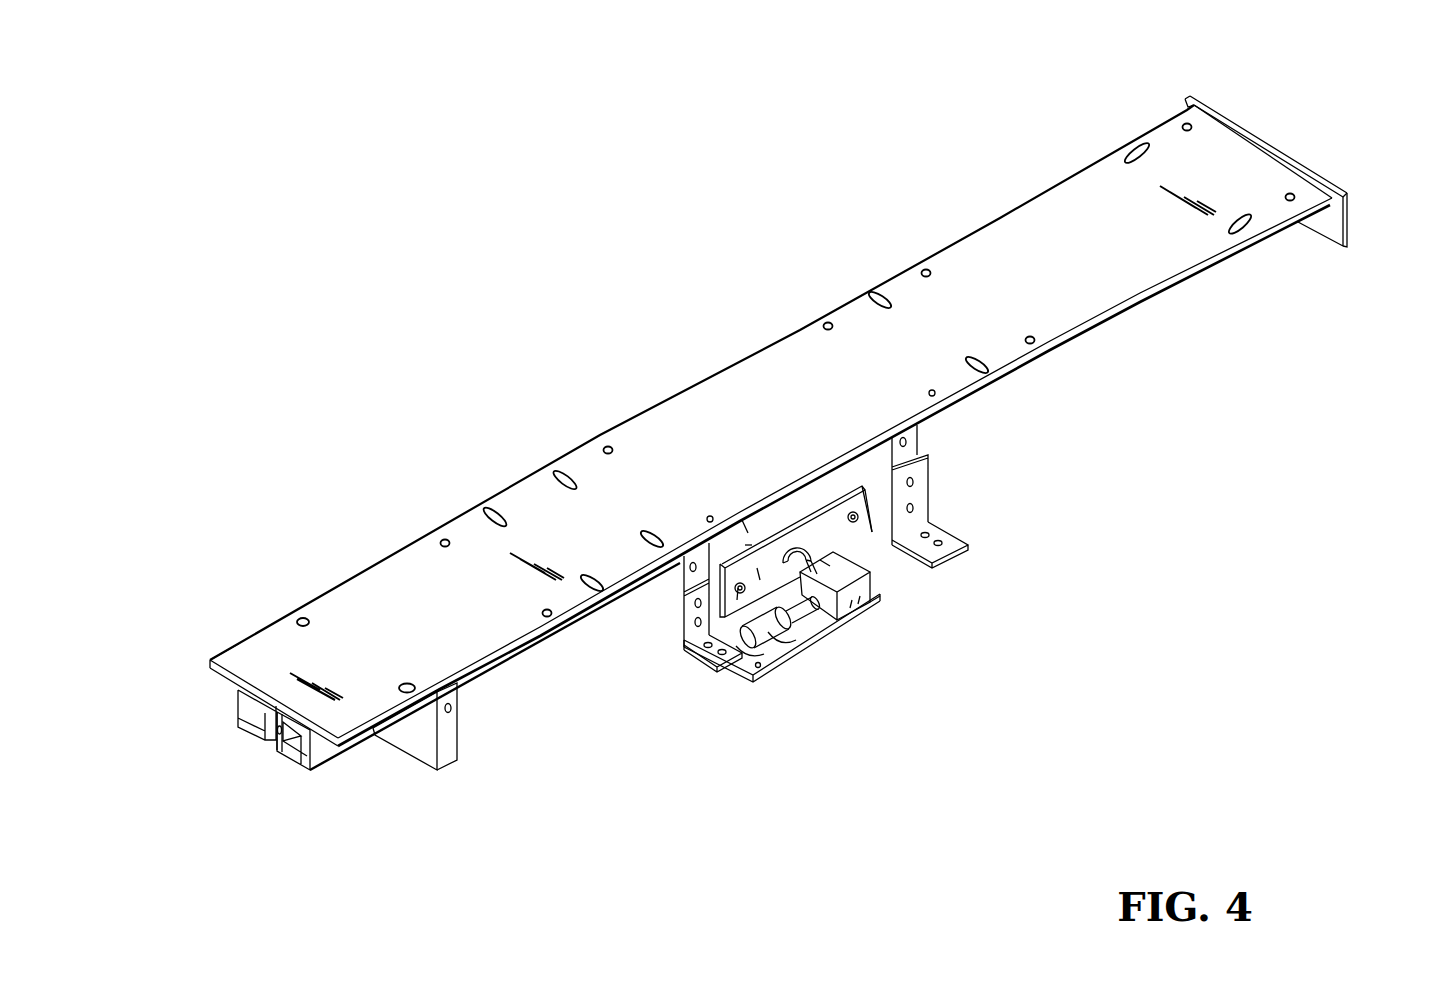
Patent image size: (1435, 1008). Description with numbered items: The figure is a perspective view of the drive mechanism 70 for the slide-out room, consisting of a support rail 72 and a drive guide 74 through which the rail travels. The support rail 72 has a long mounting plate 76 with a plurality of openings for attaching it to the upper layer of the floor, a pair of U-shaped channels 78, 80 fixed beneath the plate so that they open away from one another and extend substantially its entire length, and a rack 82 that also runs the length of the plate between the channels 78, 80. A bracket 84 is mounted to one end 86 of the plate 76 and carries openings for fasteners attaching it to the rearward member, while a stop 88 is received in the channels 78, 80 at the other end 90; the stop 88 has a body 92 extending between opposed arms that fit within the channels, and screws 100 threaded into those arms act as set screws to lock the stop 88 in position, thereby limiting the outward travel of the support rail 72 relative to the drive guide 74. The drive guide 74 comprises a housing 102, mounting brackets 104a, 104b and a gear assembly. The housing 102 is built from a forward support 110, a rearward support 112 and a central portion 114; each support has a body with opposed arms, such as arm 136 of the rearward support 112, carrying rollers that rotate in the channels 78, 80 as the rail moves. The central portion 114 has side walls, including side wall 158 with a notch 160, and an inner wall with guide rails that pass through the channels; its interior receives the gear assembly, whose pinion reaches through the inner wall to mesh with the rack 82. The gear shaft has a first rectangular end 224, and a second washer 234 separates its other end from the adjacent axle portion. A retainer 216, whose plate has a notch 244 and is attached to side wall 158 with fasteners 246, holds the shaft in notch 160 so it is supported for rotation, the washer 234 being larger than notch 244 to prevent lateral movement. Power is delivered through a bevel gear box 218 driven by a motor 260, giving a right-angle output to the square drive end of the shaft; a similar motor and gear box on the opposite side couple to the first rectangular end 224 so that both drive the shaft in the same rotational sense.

The handle assembly 70 is at (278, 318).
The support rail 72 is at (1038, 213).
The drive guide 74 is at (816, 582).
The mounting plate 76 is at (395, 577).
The U-shaped channel 78 is at (238, 733).
The U-shaped channel 80 is at (306, 752).
The rack 82 is at (272, 745).
The bracket 84 is at (1333, 227).
The end of plate 86 is at (1277, 173).
The stop 88 is at (476, 789).
The other end of plate 90 is at (238, 656).
The body 92 is at (405, 731).
The screws 100 is at (452, 708).
The housing 102 is at (856, 533).
The mounting bracket 104a is at (945, 530).
The mounting bracket 104b is at (684, 648).
The forward support 110 is at (933, 391).
The rearward support 112 is at (678, 583).
The central portion 114 is at (745, 525).
The arm 136 is at (685, 645).
The side wall 158 is at (832, 492).
The notch 160 is at (748, 540).
The retainer 216 is at (867, 478).
The bevel gear box 218 is at (860, 618).
The first rectangular end 224 is at (872, 552).
The second washer 234 is at (735, 536).
The notch 244 is at (808, 526).
The fasteners 246 is at (855, 511).
The motor 260 is at (778, 612).